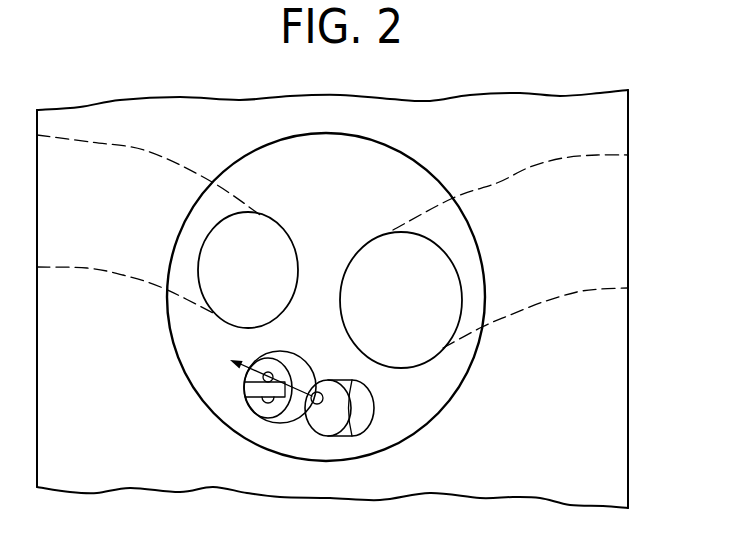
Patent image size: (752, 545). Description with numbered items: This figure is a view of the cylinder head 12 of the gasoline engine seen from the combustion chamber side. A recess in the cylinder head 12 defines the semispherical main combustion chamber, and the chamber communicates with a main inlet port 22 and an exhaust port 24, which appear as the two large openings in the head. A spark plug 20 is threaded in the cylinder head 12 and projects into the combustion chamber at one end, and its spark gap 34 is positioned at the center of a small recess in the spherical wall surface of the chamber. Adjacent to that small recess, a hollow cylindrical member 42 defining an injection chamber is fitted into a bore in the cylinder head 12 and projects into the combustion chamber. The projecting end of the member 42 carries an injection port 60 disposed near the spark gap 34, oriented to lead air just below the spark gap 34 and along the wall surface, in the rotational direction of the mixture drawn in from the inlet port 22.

The cylinder head 12 is at (628, 460).
The spark plug 20 is at (270, 412).
The main inlet port 22 is at (567, 160).
The exhaust port 24 is at (146, 150).
The spark gap 34 is at (282, 350).
The hollow cylindrical member 42 is at (330, 437).
The injection port 60 is at (321, 390).